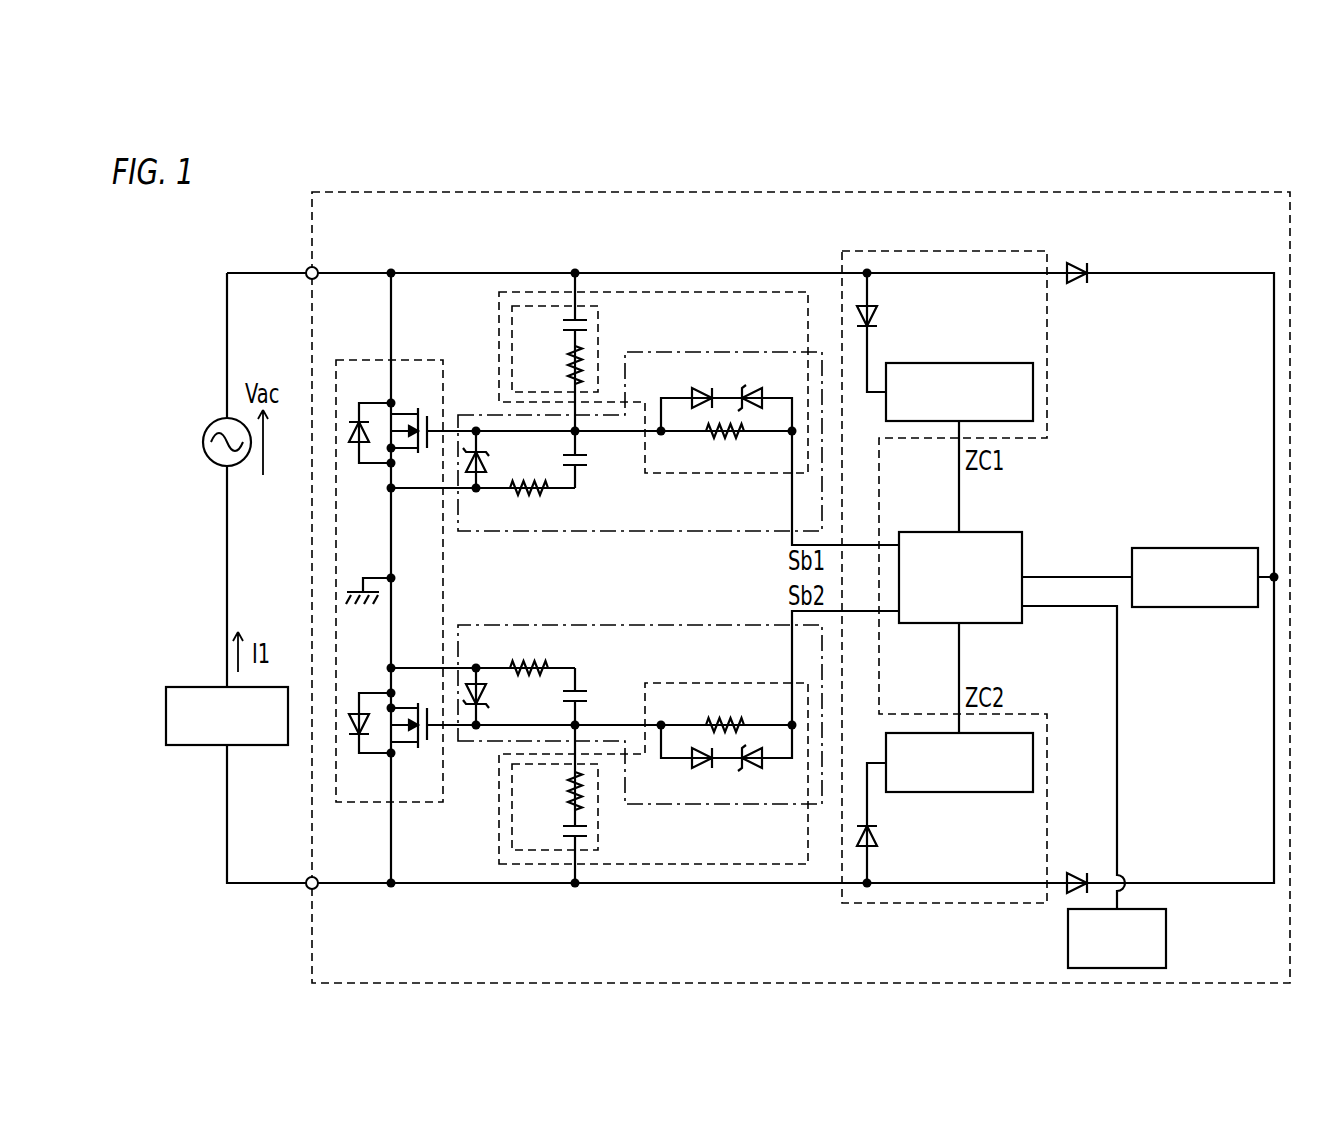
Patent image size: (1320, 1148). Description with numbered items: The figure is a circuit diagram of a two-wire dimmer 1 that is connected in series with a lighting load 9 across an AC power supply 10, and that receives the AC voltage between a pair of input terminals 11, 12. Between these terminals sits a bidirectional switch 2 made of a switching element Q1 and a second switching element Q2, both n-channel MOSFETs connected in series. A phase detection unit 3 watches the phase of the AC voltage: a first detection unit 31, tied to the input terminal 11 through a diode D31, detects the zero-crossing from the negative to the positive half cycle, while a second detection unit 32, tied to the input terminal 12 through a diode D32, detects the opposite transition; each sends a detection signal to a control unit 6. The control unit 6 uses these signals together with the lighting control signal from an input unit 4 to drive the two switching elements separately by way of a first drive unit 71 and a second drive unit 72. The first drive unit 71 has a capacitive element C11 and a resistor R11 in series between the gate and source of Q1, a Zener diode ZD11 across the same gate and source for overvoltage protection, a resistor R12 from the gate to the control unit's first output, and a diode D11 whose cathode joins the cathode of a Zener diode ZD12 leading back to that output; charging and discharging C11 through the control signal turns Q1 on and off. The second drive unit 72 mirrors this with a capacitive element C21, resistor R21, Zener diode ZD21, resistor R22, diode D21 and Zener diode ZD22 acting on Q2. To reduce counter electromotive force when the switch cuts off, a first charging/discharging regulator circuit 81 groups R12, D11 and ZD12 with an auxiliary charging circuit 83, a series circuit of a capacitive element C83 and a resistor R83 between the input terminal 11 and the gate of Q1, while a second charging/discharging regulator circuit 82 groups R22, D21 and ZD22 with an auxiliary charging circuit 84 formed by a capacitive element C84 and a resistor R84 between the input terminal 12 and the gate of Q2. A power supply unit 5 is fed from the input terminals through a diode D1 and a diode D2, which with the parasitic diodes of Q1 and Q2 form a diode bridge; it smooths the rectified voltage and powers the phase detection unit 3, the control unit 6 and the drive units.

The dimmer 1 is at (1248, 181).
The bidirectional switch 2 is at (358, 360).
The phase detection unit 3 is at (949, 251).
The input unit 4 is at (1166, 944).
The power supply unit 5 is at (1193, 548).
The control unit 6 is at (1022, 547).
The load 9 is at (192, 687).
The AC power supply 10 is at (208, 418).
The input terminal 11 is at (306, 268).
The input terminal 12 is at (307, 889).
The first detection unit 31 is at (969, 363).
The second detection unit 32 is at (968, 794).
The first drive unit 71 is at (722, 352).
The second drive unit 72 is at (722, 804).
The first charging/discharging regulator circuit 81 is at (654, 291).
The second charging/discharging regulator circuit 82 is at (648, 868).
The auxiliary charging circuit 83 is at (599, 337).
The auxiliary charging circuit 84 is at (599, 820).
The switching element Q1 is at (390, 418).
The second switching element Q2 is at (395, 736).
The capacitive element C83 is at (552, 326).
The resistor R83 is at (550, 366).
The capacitive element C84 is at (553, 836).
The resistor R84 is at (551, 791).
The Zener diode ZD11 is at (503, 464).
The capacitive element C11 is at (598, 464).
The resistor R11 is at (530, 505).
The diode D11 is at (693, 382).
The Zener diode ZD12 is at (765, 384).
The resistor R12 is at (726, 448).
The Zener diode ZD21 is at (503, 700).
The capacitive element C21 is at (598, 701).
The resistor R21 is at (529, 653).
The diode D21 is at (693, 776).
The Zener diode ZD22 is at (765, 774).
The resistor R22 is at (725, 710).
The diode D31 is at (889, 319).
The diode D32 is at (889, 841).
The diode D1 is at (1078, 256).
The diode D2 is at (1078, 867).